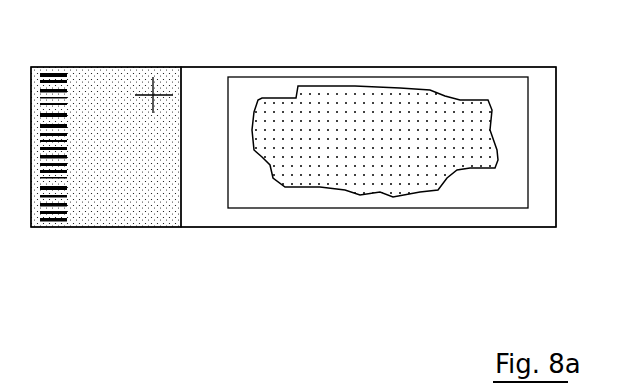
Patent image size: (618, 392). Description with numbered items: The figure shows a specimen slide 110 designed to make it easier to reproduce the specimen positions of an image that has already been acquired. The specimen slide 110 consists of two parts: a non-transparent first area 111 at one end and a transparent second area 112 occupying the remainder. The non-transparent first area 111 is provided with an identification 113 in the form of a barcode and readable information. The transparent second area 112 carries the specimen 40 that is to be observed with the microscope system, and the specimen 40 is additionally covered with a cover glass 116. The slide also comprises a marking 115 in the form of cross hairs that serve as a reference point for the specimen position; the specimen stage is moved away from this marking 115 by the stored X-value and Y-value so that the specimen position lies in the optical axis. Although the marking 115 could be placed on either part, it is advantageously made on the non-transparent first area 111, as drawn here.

The specimen slide 110 is at (252, 55).
The non-transparent first area 111 is at (132, 228).
The transparent second area 112 is at (518, 227).
The identification 113 is at (108, 108).
The marking 115 is at (156, 95).
The cover glass 116 is at (508, 88).
The specimen 40 is at (350, 172).